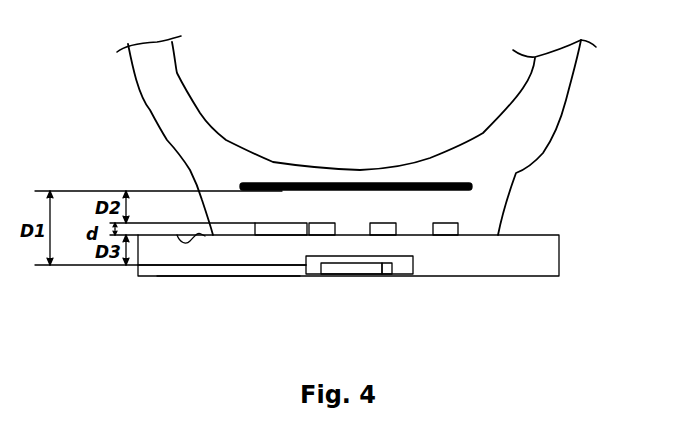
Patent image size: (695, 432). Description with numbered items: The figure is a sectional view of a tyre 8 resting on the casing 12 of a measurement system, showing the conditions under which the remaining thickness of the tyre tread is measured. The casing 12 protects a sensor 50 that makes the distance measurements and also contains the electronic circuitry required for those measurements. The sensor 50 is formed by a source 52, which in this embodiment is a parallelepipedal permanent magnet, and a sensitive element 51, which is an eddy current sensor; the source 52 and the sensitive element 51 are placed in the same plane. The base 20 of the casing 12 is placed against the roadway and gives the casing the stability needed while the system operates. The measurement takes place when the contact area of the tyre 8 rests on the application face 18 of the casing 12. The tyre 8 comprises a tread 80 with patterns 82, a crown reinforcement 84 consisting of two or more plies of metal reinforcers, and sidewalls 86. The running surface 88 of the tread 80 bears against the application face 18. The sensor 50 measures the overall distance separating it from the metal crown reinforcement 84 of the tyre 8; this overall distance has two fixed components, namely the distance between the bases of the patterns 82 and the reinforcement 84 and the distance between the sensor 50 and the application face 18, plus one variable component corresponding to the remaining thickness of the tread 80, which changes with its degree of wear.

The tyre 8 is at (338, 122).
The sidewalls 86 is at (560, 77).
The running surface 88 is at (298, 235).
The crown reinforcement 84 is at (400, 183).
The application face 18 is at (177, 235).
The tread 80 is at (475, 227).
The patterns 82 is at (446, 226).
The casing 12 is at (157, 276).
The base 20 is at (218, 276).
The sensor 50 is at (307, 268).
The source 52 is at (335, 267).
The sensitive element 51 is at (385, 267).